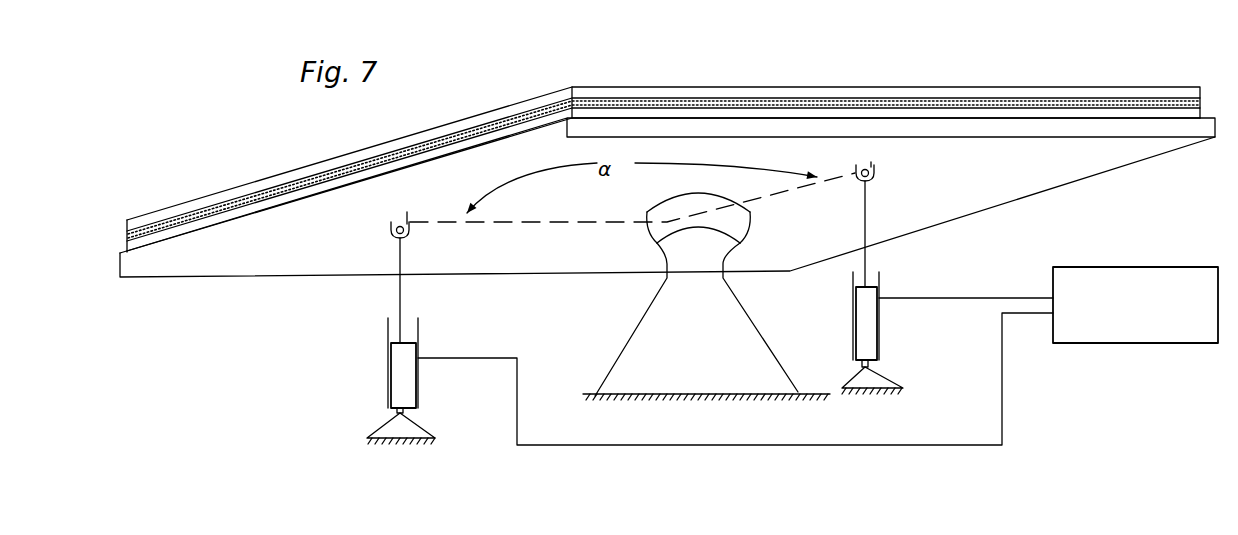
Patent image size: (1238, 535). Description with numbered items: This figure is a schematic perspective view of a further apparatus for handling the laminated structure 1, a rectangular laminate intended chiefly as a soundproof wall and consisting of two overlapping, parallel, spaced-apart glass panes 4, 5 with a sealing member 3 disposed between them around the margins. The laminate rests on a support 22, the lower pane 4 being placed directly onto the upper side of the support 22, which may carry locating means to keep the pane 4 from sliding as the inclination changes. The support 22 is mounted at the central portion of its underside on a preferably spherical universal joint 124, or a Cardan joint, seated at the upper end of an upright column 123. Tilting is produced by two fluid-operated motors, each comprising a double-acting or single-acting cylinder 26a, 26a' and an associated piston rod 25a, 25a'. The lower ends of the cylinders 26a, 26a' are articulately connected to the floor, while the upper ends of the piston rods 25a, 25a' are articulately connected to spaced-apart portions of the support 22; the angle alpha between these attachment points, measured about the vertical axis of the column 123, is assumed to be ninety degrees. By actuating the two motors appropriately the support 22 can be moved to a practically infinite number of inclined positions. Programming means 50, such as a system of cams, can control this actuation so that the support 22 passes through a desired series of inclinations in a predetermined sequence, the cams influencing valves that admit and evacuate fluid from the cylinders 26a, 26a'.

The laminated structure 1 is at (858, 74).
The sealing member 3 is at (1007, 98).
The lower glass pane 4 is at (930, 113).
The upper glass pane 5 is at (793, 93).
The support 22 is at (1098, 128).
The piston rod 25a is at (426, 277).
The piston rod 25a' is at (892, 224).
The cylinder 26a is at (419, 381).
The cylinder 26a' is at (889, 333).
The programming means 50 is at (1122, 266).
The column 123 is at (672, 307).
The universal joint 124 is at (647, 252).